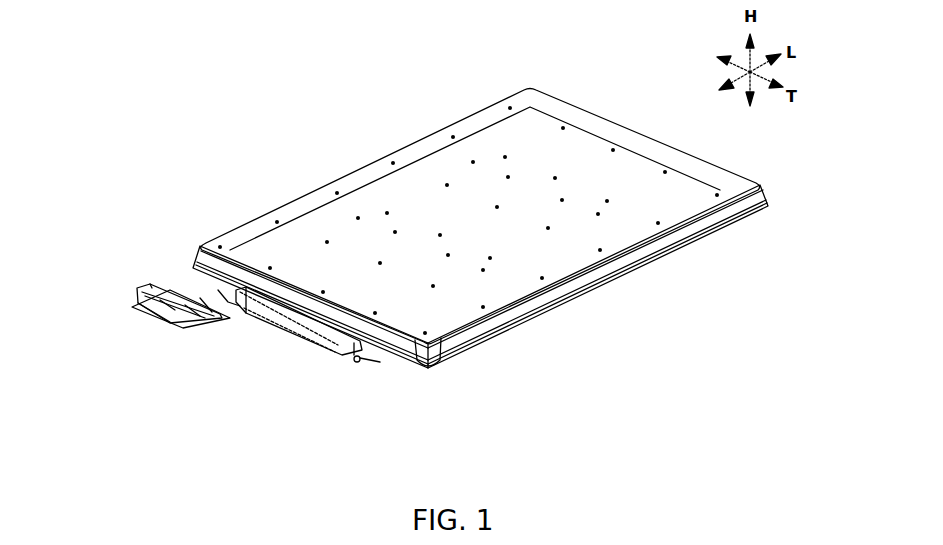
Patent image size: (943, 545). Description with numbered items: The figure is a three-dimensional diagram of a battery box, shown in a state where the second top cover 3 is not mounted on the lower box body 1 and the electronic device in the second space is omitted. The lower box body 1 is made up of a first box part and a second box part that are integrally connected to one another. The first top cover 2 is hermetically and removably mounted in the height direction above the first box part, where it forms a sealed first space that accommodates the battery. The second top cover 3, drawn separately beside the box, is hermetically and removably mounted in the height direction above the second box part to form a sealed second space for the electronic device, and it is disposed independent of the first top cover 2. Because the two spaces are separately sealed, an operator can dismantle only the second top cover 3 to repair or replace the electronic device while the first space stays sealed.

The lower box body 1 is at (431, 378).
The first top cover 2 is at (490, 134).
The second top cover 3 is at (152, 290).